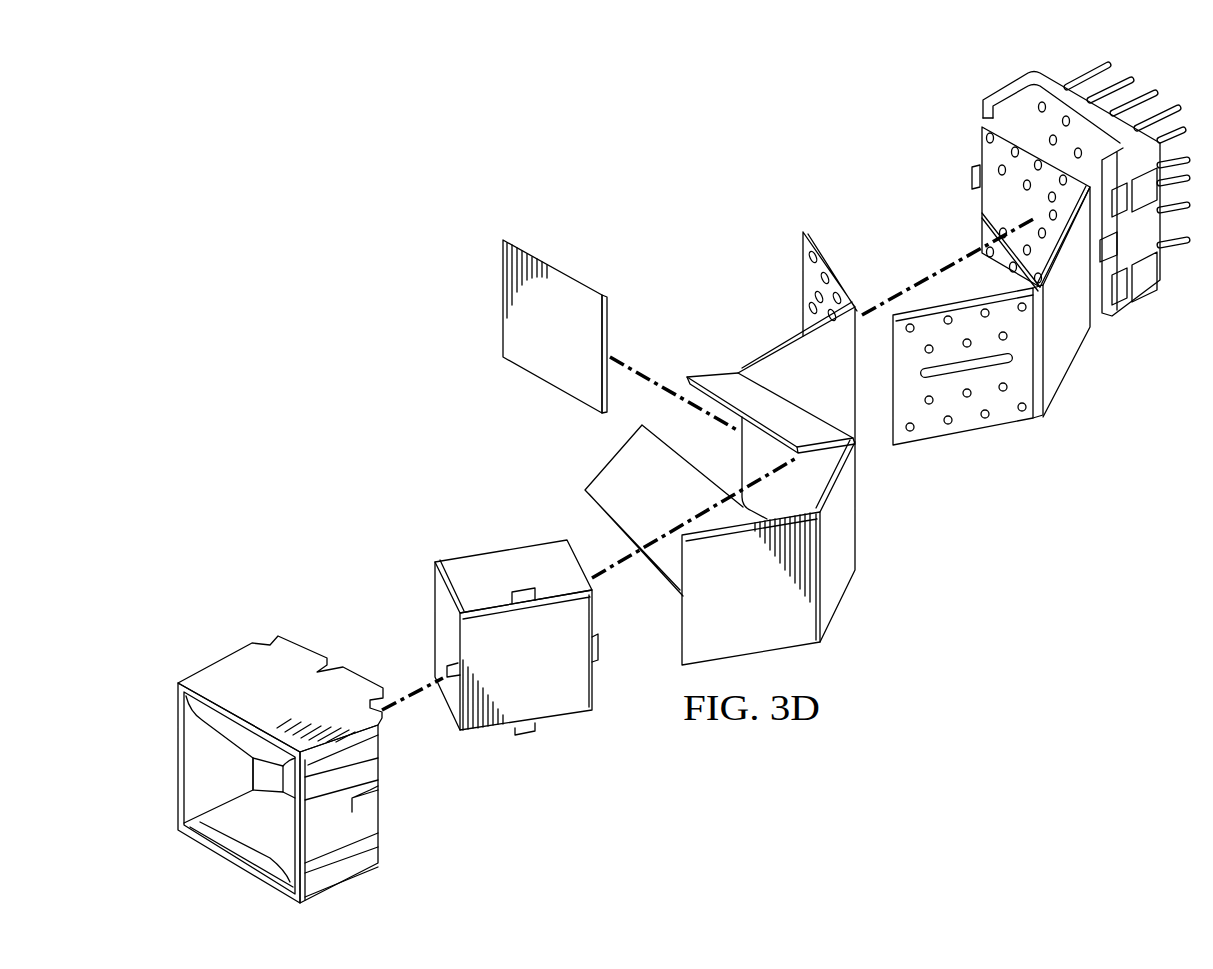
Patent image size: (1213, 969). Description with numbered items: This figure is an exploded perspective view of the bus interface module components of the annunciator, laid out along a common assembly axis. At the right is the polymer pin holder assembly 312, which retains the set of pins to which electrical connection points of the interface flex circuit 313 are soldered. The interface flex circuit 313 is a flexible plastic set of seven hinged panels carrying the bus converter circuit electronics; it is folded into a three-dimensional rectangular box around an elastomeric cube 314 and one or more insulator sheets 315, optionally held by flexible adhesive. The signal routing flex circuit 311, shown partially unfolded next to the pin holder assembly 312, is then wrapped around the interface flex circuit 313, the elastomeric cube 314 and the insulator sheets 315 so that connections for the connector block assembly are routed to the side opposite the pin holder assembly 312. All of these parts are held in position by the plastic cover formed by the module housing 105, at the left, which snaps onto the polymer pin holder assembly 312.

The module housing 105 is at (227, 668).
The signal routing flex circuit 311 is at (965, 423).
The polymer pin holder assembly 312 is at (1047, 87).
The interface flex circuit 313 is at (840, 595).
The elastomeric cube 314 is at (506, 560).
The insulator sheets 315 is at (552, 372).